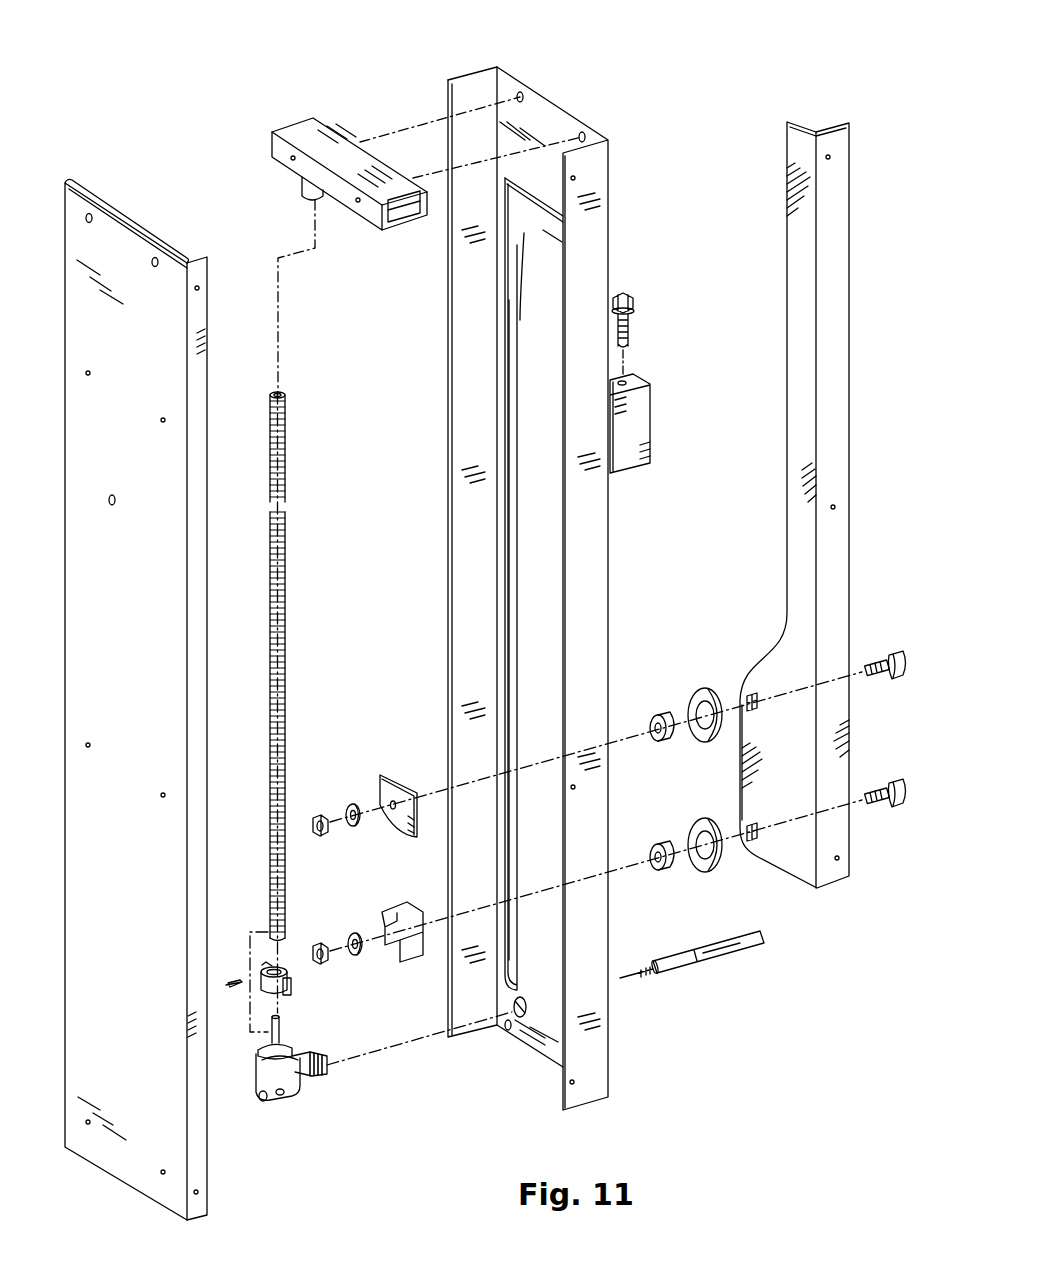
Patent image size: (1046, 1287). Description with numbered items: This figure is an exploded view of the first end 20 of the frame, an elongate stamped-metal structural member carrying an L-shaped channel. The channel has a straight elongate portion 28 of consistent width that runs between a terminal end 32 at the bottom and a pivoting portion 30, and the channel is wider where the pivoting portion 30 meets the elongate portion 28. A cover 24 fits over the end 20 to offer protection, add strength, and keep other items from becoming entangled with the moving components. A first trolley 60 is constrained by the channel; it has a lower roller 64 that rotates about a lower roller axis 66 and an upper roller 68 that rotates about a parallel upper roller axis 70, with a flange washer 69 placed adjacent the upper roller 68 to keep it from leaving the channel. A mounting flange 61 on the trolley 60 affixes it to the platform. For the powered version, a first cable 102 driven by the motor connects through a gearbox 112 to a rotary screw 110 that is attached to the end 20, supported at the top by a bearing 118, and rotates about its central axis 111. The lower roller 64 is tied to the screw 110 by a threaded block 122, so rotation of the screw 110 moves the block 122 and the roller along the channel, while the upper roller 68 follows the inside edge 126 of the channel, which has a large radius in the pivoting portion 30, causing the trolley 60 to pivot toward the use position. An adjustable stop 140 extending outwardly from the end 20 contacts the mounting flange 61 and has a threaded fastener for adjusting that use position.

The first end 20 is at (540, 118).
The cover 24 is at (115, 250).
The elongate portion 28 is at (512, 537).
The pivoting portion 30 is at (536, 217).
The terminal end 32 is at (505, 962).
The first trolley 60 is at (793, 858).
The mounting flange 61 is at (833, 458).
The lower roller 64 is at (663, 830).
The lower roller axis 66 is at (628, 726).
The upper roller 68 is at (660, 708).
The flange washer 69 is at (380, 786).
The upper roller axis 70 is at (622, 862).
The first cable 102 is at (725, 955).
The rotary screw 110 is at (285, 625).
The central axis 111 is at (278, 352).
The gearbox 112 is at (285, 1075).
The bearing 118 is at (300, 190).
The threaded block 122 is at (291, 985).
The inside edge 126 is at (524, 233).
The adjustable stop 140 is at (640, 422).